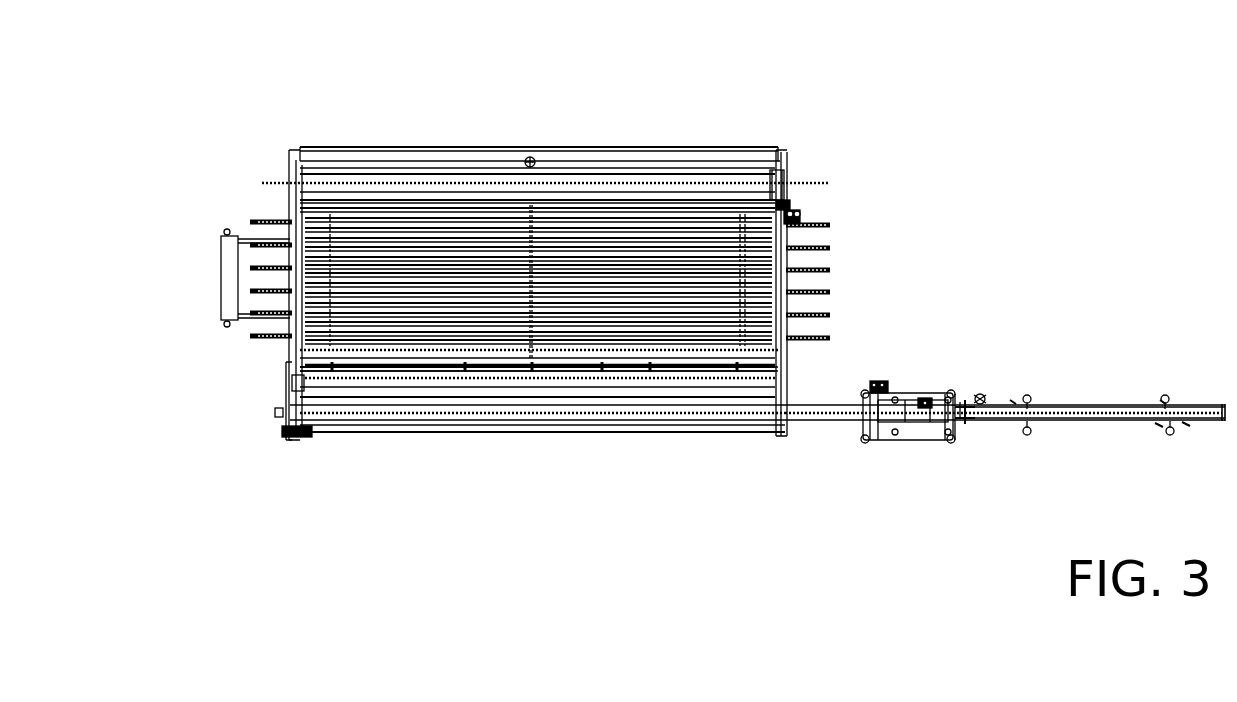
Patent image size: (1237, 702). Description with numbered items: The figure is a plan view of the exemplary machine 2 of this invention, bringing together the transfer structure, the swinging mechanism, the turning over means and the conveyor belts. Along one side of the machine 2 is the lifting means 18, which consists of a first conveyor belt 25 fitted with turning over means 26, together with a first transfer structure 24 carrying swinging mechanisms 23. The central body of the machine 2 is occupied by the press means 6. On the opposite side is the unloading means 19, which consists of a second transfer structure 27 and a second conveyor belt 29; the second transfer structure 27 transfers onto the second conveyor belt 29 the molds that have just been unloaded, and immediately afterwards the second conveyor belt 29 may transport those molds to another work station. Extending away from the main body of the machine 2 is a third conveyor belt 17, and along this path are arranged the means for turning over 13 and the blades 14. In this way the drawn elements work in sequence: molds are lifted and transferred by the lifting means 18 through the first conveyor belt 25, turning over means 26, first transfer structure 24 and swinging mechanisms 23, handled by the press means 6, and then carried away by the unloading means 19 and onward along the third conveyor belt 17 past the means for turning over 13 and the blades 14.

The machine 2 is at (248, 148).
The second conveyor belt 29 is at (765, 150).
The second transfer structure 27 is at (757, 186).
The unloading means 19 is at (804, 150).
The press means 6 is at (830, 218).
The swinging mechanisms 23 is at (785, 372).
The lifting means 18 is at (176, 366).
The first transfer structure 24 is at (291, 384).
The first conveyor belt 25 is at (358, 436).
The turning over means 26 is at (500, 436).
The third conveyor belt 17 is at (1086, 407).
The means for turning over 13 is at (897, 442).
The blades 14 is at (918, 430).